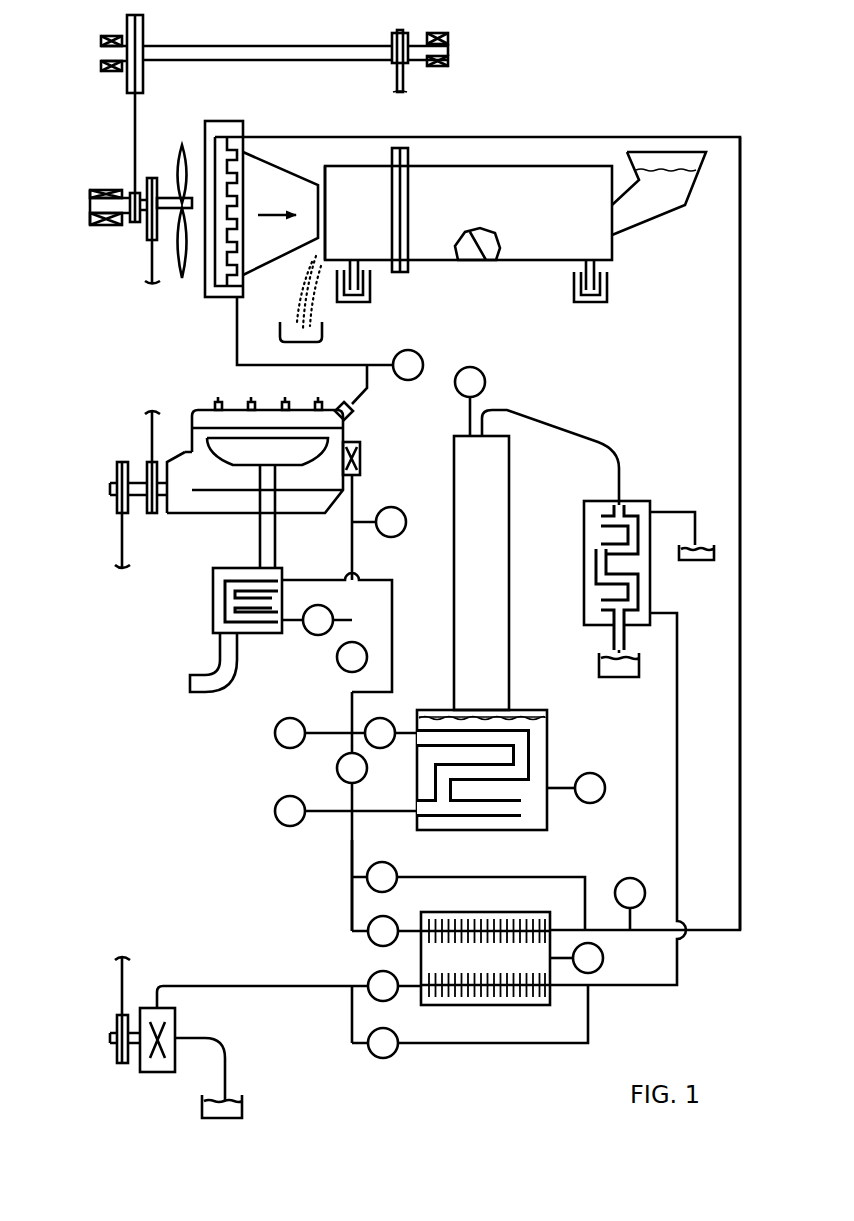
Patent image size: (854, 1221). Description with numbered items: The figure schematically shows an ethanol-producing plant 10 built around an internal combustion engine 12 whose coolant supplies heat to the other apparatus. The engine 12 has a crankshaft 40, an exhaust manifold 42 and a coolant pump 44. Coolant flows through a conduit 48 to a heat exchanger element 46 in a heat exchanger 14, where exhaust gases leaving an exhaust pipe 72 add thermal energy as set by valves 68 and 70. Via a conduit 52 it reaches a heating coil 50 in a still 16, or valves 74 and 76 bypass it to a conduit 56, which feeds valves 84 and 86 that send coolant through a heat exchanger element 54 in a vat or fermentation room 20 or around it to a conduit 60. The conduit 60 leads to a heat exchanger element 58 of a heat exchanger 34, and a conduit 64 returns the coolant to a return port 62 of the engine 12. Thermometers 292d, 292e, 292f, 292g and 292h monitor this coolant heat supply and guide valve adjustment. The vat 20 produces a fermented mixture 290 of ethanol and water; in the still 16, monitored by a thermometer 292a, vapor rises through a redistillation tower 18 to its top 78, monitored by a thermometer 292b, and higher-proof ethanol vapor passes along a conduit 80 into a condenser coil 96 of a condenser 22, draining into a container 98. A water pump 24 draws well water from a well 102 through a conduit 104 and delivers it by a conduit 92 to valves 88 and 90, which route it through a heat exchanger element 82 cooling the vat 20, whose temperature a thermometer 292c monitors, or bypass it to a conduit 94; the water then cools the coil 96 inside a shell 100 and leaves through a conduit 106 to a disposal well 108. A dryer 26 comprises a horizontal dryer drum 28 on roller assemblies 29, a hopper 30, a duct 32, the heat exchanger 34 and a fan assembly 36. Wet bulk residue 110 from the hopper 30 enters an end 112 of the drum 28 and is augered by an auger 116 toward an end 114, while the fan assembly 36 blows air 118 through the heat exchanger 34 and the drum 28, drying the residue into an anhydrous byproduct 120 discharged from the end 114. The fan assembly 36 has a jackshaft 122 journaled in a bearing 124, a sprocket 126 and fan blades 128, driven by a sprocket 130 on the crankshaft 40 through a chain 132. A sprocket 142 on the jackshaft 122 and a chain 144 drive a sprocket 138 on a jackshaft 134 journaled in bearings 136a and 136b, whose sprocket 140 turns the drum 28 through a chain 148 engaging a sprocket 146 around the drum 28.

The ethanol-producing plant 10 is at (572, 60).
The internal combustion engine 12 is at (115, 586).
The heat exchanger 14 is at (177, 645).
The still 16 is at (565, 758).
The redistillation tower 18 is at (509, 645).
The vat or fermentation room 20 is at (622, 1003).
The condenser 22 is at (641, 482).
The water pump 24 is at (105, 1078).
The dryer 26 is at (505, 300).
The dryer drum 28 is at (553, 217).
The roller assemblies 29 is at (607, 290).
The hopper 30 is at (662, 222).
The duct 32 is at (291, 204).
The heat exchanger 34 is at (228, 106).
The fan assembly 36 is at (106, 310).
The crankshaft 40 is at (117, 488).
The exhaust manifold 42 is at (285, 466).
The coolant pump 44 is at (360, 455).
The heat exchanger element 46 is at (213, 626).
The conduit 48 is at (352, 502).
The heating coil 50 is at (417, 802).
The conduit 52 is at (392, 680).
The heat exchanger element 54 is at (490, 898).
The conduit 56 is at (352, 856).
The heat exchanger element 58 is at (243, 137).
The conduit 60 is at (740, 365).
The return port 62 is at (355, 409).
The conduit 64 is at (237, 360).
The valve 68 is at (313, 635).
The valve 70 is at (338, 662).
The exhaust pipe 72 is at (200, 693).
The valve 74 is at (386, 748).
The valve 76 is at (337, 770).
The top 78 is at (454, 437).
The conduit 80 is at (554, 422).
The heat exchanger element 82 is at (500, 992).
The valve 84 is at (378, 947).
The valve 86 is at (394, 870).
The valve 88 is at (396, 1000).
The valve 90 is at (393, 1056).
The conduit 92 is at (280, 986).
The conduit 94 is at (677, 976).
The condenser coil 96 is at (594, 522).
The container 98 is at (619, 678).
The shell 100 is at (584, 566).
The well 102 is at (242, 1108).
The conduit 104 is at (226, 1065).
The conduit 106 is at (716, 500).
The disposal well 108 is at (690, 562).
The wet bulk residue 110 is at (690, 207).
The end 112 is at (612, 262).
The end 114 is at (327, 156).
The auger 116 is at (500, 247).
The air 118 is at (280, 235).
The anhydrous byproduct 120 is at (314, 316).
The jackshaft 122 is at (90, 195).
The bearing 124 is at (90, 218).
The sprocket 126 is at (150, 242).
The fan blades 128 is at (185, 272).
The sprocket 130 is at (152, 513).
The chain 132 is at (152, 440).
The jackshaft 134 is at (290, 46).
The bearing 136a is at (112, 36).
The bearing 136b is at (440, 33).
The sprocket 138 is at (143, 26).
The sprocket 140 is at (395, 35).
The sprocket 142 is at (133, 222).
The chain 144 is at (135, 132).
The sprocket 146 is at (404, 273).
The chain 148 is at (405, 82).
The fermented mixture 290 is at (547, 716).
The thermometer 292a is at (638, 840).
The thermometer 292b is at (485, 383).
The thermometer 292c is at (603, 958).
The thermometer 292d is at (385, 537).
The thermometer 292e is at (280, 742).
The thermometer 292f is at (276, 808).
The thermometer 292g is at (656, 873).
The thermometer 292h is at (412, 350).